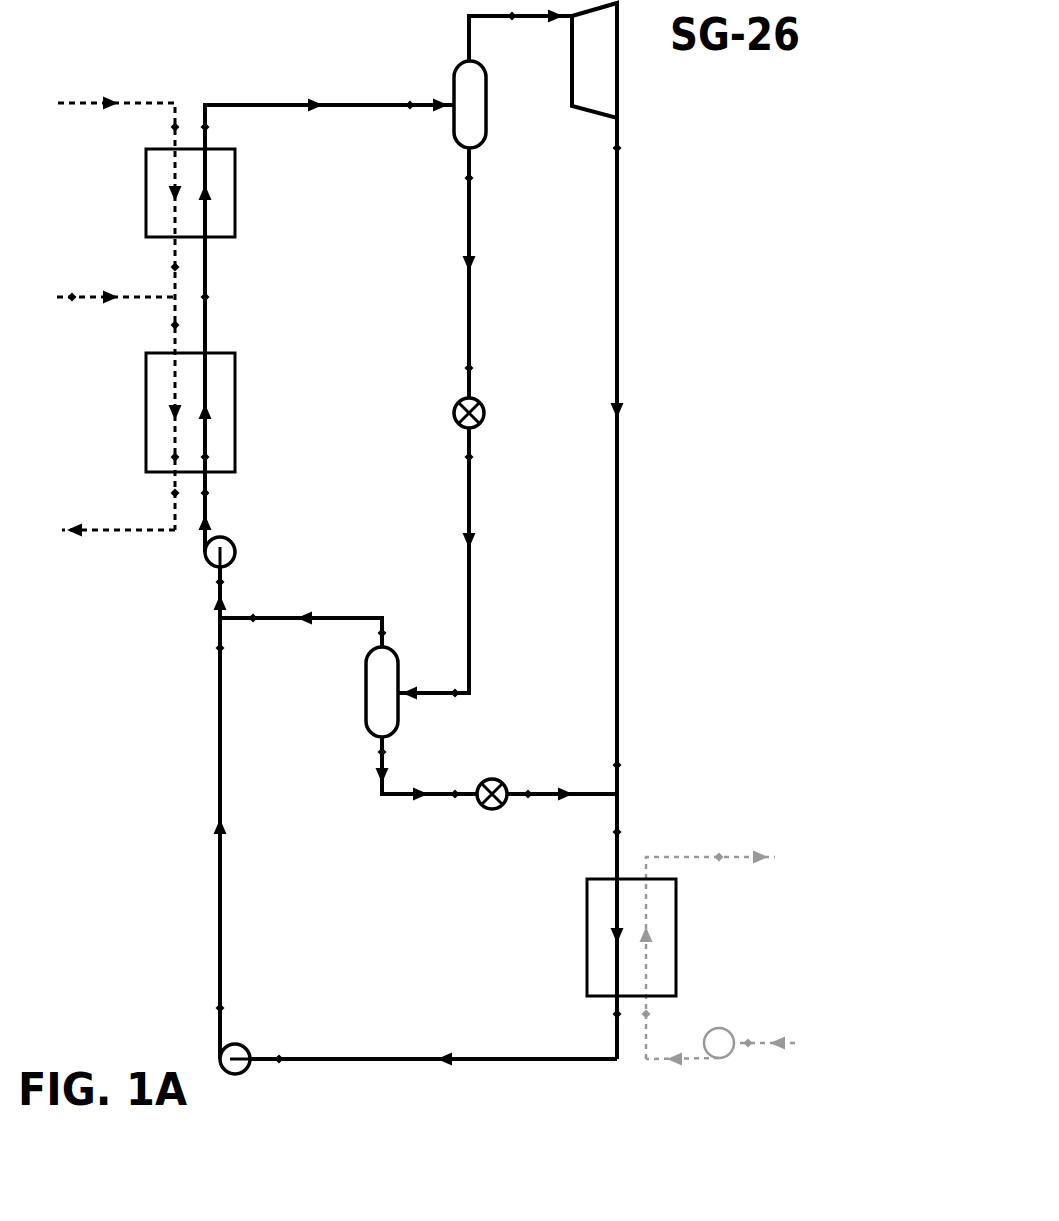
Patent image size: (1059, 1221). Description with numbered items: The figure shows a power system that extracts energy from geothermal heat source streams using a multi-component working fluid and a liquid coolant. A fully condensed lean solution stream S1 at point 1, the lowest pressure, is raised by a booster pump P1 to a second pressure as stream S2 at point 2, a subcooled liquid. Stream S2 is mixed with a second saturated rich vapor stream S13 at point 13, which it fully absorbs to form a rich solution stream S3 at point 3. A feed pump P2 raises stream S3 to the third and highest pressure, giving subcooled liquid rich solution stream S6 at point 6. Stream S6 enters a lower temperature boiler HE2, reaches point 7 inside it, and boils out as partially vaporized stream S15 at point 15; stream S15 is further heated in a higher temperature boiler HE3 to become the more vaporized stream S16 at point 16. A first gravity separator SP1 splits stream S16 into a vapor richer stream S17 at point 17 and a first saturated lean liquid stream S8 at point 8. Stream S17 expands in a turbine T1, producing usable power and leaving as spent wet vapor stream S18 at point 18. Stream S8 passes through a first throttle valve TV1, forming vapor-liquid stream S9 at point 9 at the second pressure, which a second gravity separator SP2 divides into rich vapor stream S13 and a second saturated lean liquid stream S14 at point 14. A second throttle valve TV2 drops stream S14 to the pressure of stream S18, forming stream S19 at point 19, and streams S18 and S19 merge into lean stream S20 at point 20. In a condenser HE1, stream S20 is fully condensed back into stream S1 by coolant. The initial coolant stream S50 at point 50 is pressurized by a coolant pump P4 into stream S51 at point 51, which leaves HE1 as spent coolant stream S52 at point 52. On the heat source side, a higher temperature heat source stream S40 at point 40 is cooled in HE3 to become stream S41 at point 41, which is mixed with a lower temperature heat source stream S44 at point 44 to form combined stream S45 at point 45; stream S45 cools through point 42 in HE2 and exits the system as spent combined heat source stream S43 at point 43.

The point 1 is at (447, 1035).
The point 2 is at (219, 828).
The point 3 is at (212, 582).
The point 6 is at (213, 493).
The point 7 is at (213, 458).
The point 8 is at (481, 275).
The point 9 is at (466, 573).
The point 13 is at (330, 619).
The point 14 is at (422, 771).
The point 15 is at (217, 297).
The point 16 is at (310, 119).
The point 17 is at (516, 32).
The point 18 is at (632, 458).
The point 19 is at (530, 785).
The point 20 is at (606, 832).
The point 40 is at (163, 128).
The point 41 is at (164, 267).
The point 42 is at (165, 458).
The point 43 is at (161, 493).
The point 44 is at (72, 287).
The point 45 is at (163, 326).
The point 50 is at (750, 1055).
The point 51 is at (659, 1015).
The point 52 is at (722, 869).
The fully condensed lean solution stream S1 is at (617, 1033).
The pressurized fully condensed lean solution stream S2 is at (218, 884).
The rich solution stream S3 is at (222, 574).
The liquid rich solution stream S6 is at (205, 512).
The first saturated lean liquid stream S8 is at (469, 312).
The vapor-liquid stream S9 is at (469, 500).
The second saturated rich vapor stream S13 is at (320, 618).
The second saturated lean liquid stream S14 is at (403, 800).
The partially vaporized rich solution stream S15 is at (205, 267).
The further vaporized rich solution stream S16 is at (278, 105).
The vapor richer solution stream S17 is at (469, 40).
The spent stream S18 is at (617, 207).
The lower pressure mixed vapor-liquid lean stream S19 is at (588, 794).
The vapor-liquid lean solution stream S20 is at (617, 862).
The higher temperature heat source stream S40 is at (93, 108).
The cooled higher temperature heat source stream S41 is at (175, 253).
The spent combined heat source stream S43 is at (145, 540).
The lower temperature heat source stream S44 is at (87, 302).
The combined heat source stream S45 is at (175, 340).
The initial coolant stream S50 is at (757, 1043).
The pressurized coolant stream S51 is at (695, 1055).
The spent coolant stream S52 is at (715, 857).
The condenser HE1 is at (610, 937).
The lower temperature boiler HE2 is at (170, 412).
The higher temperature boiler HE3 is at (170, 193).
The first gravity separator SP1 is at (491, 104).
The second gravity separator SP2 is at (360, 692).
The turbine T1 is at (594, 60).
The first throttle valve TV1 is at (491, 413).
The second throttle valve TV2 is at (491, 807).
The booster pump P1 is at (221, 1059).
The feed pump P2 is at (206, 552).
The coolant pump P4 is at (719, 1034).